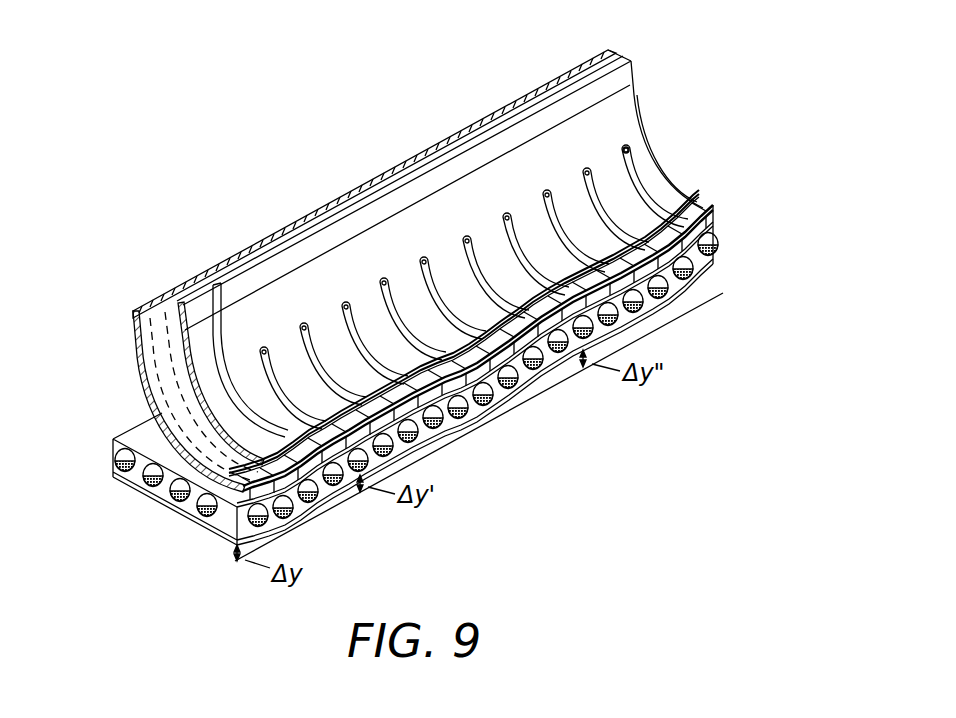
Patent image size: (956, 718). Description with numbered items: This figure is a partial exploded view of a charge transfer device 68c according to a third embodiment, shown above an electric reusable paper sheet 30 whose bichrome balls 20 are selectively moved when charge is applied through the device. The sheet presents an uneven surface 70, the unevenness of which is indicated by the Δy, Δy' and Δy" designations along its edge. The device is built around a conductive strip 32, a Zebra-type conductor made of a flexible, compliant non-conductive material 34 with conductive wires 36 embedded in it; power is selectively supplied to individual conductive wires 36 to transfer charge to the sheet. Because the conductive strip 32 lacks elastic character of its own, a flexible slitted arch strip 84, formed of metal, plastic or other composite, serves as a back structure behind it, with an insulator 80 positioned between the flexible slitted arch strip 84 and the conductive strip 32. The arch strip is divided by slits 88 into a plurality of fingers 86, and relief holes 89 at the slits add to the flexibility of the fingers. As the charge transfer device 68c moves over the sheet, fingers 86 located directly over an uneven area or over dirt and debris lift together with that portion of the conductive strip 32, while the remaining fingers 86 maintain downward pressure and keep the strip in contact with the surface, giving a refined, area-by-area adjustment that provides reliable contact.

The bichrome balls 20 is at (516, 400).
The electric reusable paper sheet 30 is at (385, 388).
The conductive strip 32 is at (159, 360).
The non-conductive material 34 is at (163, 297).
The conductive wires 36 is at (152, 300).
The charge transfer device 68c is at (362, 121).
The uneven surface 70 is at (306, 516).
The insulator 80 is at (615, 51).
The flexible slitted arch strip 84 is at (632, 78).
The fingers 86 is at (697, 205).
The slits 88 is at (648, 182).
The relief holes 89 is at (628, 138).